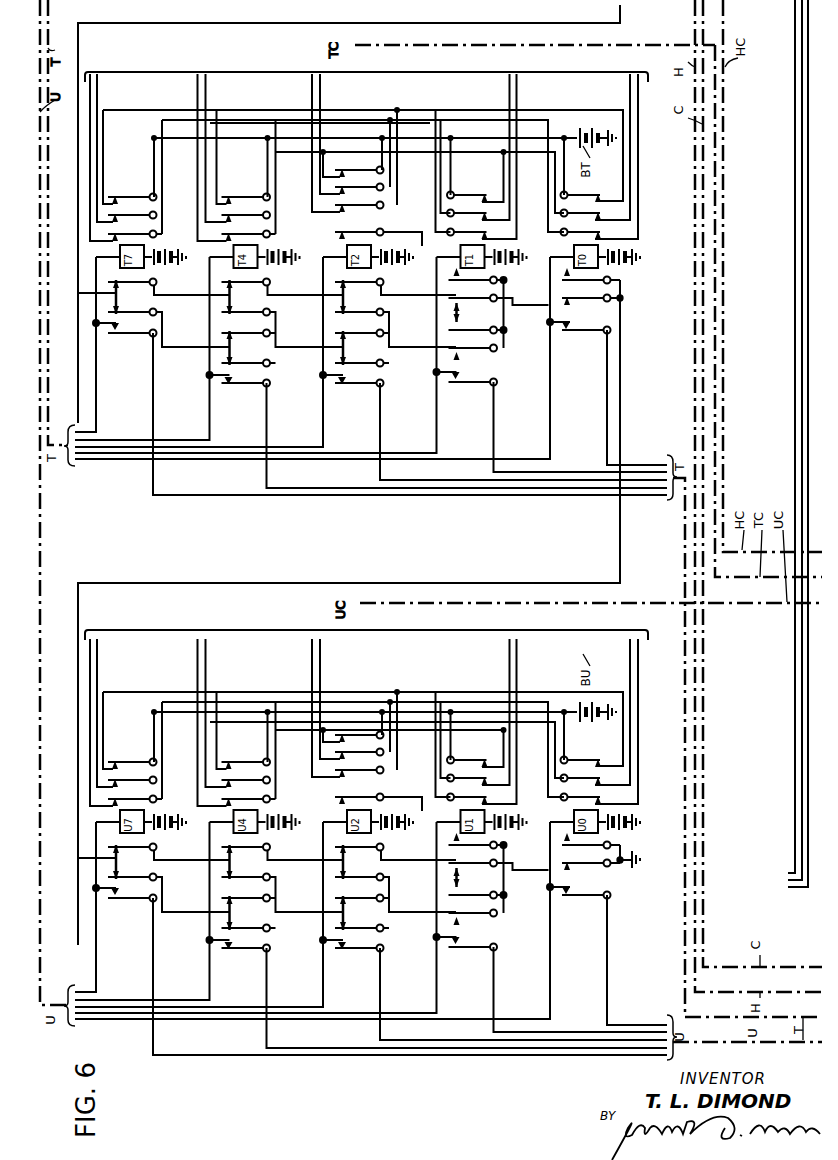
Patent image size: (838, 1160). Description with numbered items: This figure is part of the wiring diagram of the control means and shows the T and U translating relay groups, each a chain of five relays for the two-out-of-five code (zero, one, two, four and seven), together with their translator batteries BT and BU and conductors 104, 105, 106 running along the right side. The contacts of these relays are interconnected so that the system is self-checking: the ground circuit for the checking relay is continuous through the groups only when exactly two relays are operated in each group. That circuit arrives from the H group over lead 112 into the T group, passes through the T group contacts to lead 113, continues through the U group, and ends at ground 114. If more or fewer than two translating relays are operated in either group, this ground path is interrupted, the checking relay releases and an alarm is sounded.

The conductor 104 is at (795, 223).
The conductor 105 is at (802, 160).
The conductor 106 is at (808, 100).
The lead 112 is at (78, 200).
The lead 113 is at (623, 364).
The ground 114 is at (632, 878).